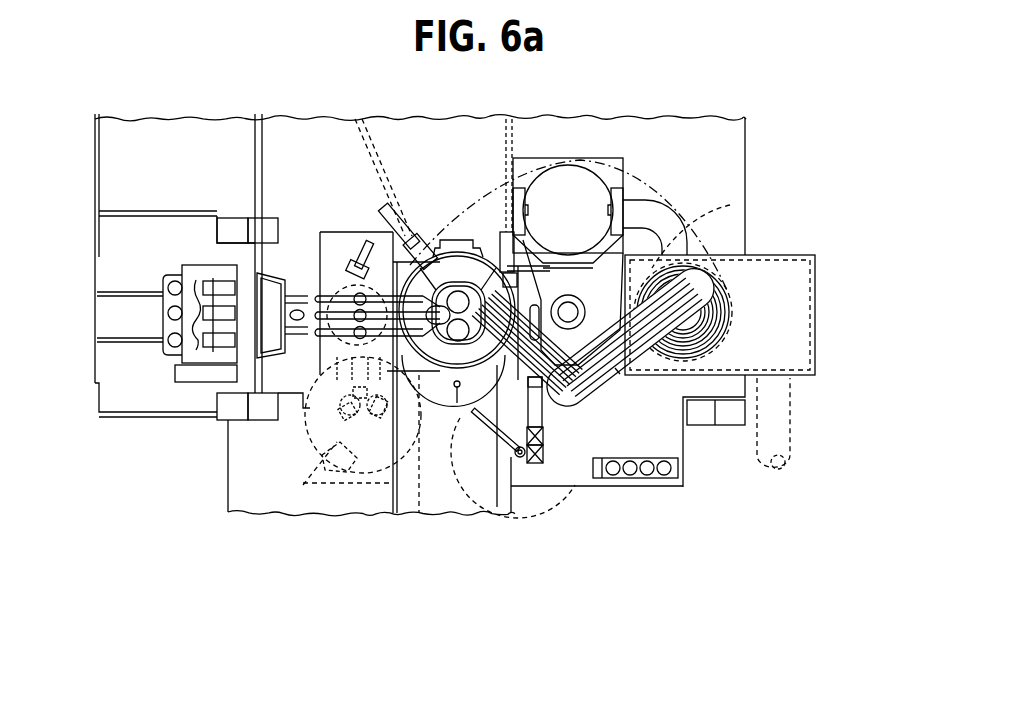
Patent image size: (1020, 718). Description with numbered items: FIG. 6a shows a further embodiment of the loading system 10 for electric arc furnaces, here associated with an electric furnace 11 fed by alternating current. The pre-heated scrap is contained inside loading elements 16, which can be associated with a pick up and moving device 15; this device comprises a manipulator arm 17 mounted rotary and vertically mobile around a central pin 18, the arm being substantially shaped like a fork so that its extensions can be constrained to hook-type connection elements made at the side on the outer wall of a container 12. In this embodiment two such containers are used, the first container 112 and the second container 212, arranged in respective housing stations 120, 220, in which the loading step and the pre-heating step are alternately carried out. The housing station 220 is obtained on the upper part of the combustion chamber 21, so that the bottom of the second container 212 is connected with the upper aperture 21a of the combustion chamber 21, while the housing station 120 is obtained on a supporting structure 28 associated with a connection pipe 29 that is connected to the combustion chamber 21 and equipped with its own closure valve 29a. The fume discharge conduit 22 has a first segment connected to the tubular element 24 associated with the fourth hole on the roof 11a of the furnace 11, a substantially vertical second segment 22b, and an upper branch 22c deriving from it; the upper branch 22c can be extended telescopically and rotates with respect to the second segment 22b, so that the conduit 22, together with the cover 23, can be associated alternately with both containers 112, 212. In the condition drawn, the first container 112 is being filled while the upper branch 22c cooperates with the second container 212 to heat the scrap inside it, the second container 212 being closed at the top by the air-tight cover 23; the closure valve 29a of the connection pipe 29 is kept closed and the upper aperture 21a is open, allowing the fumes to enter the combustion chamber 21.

The loading system 10 is at (749, 505).
The electric furnace 11 is at (423, 232).
The roof 11a is at (453, 360).
The container 12 is at (608, 175).
The first container 112 is at (629, 190).
The housing station 120 is at (560, 150).
The pick up and moving device 15 is at (630, 220).
The loading elements 16 is at (587, 150).
The manipulator arm 17 is at (538, 298).
The central pin 18 is at (572, 308).
The combustion chamber 21 is at (747, 267).
The upper aperture 21a is at (713, 378).
The fume discharge conduit 22 is at (584, 402).
The second segment 22b is at (575, 487).
The upper branch 22c is at (620, 374).
The cover 23 is at (730, 277).
The tubular element 24 is at (515, 470).
The supporting structure 28 is at (545, 232).
The connection pipe 29 is at (697, 203).
The closure valve 29a is at (730, 205).
The second container 212 is at (730, 313).
The housing station 220 is at (736, 331).